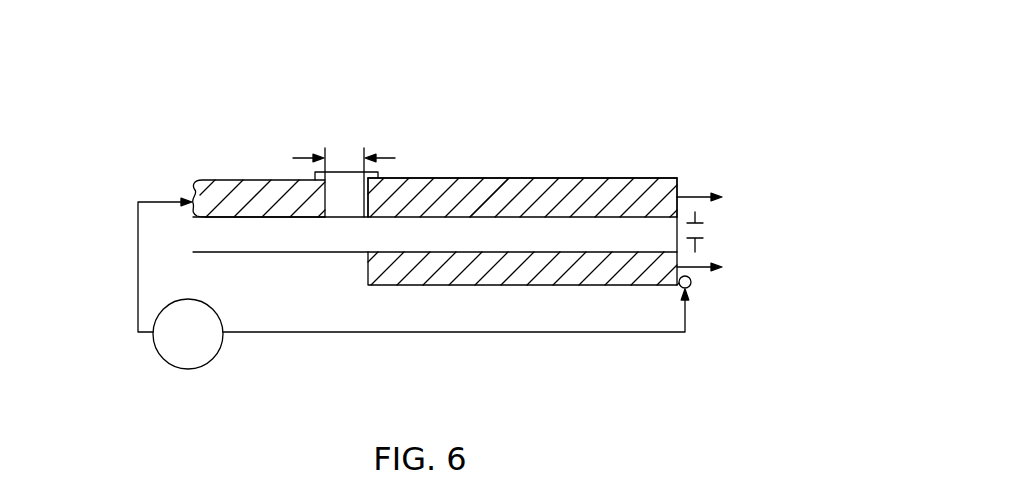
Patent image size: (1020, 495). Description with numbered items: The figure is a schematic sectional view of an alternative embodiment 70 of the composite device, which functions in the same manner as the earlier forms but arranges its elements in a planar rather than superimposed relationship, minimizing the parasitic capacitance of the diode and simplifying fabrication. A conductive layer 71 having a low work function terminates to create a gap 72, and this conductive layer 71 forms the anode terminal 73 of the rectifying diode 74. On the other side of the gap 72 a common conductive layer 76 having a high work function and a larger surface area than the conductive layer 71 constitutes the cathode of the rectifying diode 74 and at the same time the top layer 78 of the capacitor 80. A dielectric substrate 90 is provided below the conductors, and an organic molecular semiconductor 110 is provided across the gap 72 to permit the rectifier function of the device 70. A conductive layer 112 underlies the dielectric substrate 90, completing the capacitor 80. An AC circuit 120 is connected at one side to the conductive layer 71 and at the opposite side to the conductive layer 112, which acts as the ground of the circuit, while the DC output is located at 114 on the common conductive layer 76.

The alternative embodiment of the composite device 70 is at (344, 312).
The conductive layer 71 is at (208, 182).
The gap 72 is at (345, 203).
The anode terminal 73 is at (322, 198).
The rectifying diode 74 is at (358, 172).
The common conductive layer 76 is at (569, 168).
The top layer of the capacitor 78 is at (503, 190).
The capacitor 80 is at (632, 169).
The dielectric substrate 90 is at (324, 258).
The organic molecular semiconductor 110 is at (340, 183).
The conductive layer 112 is at (568, 270).
The DC output 114 is at (672, 187).
The AC circuit 120 is at (382, 283).